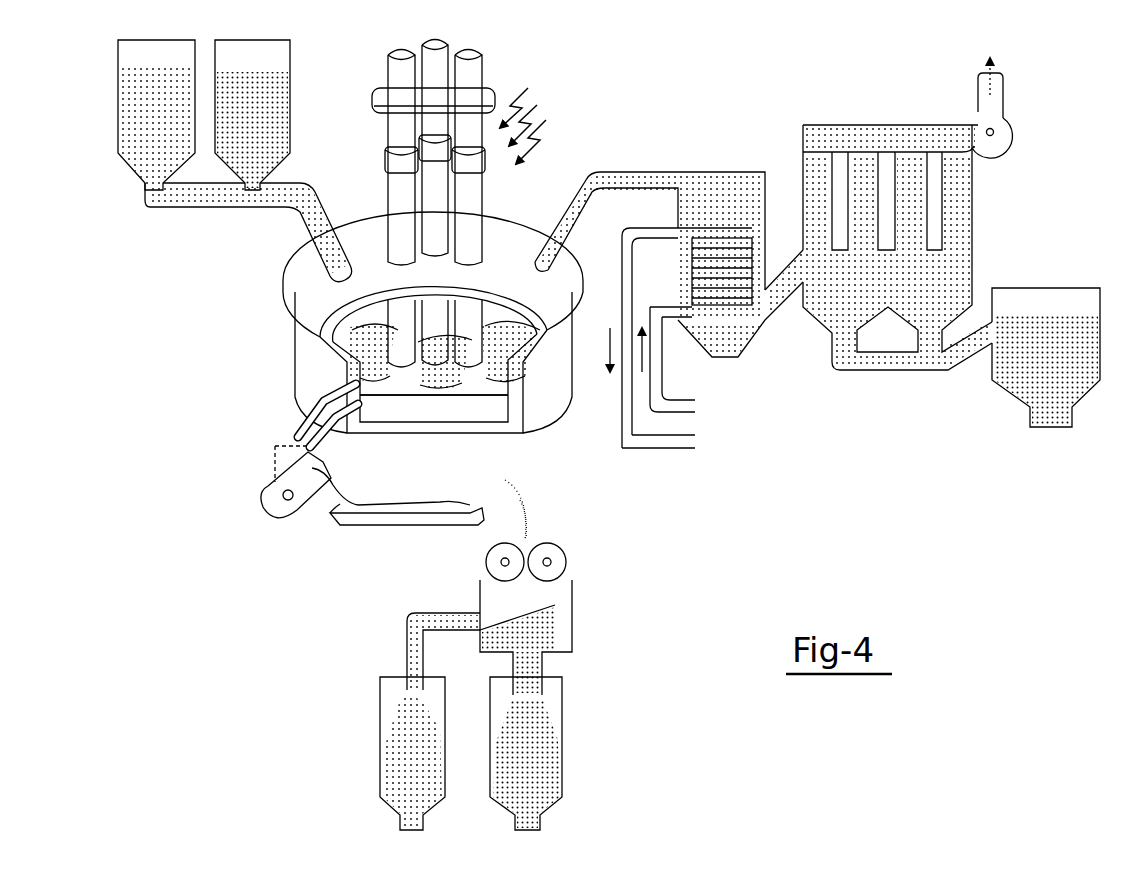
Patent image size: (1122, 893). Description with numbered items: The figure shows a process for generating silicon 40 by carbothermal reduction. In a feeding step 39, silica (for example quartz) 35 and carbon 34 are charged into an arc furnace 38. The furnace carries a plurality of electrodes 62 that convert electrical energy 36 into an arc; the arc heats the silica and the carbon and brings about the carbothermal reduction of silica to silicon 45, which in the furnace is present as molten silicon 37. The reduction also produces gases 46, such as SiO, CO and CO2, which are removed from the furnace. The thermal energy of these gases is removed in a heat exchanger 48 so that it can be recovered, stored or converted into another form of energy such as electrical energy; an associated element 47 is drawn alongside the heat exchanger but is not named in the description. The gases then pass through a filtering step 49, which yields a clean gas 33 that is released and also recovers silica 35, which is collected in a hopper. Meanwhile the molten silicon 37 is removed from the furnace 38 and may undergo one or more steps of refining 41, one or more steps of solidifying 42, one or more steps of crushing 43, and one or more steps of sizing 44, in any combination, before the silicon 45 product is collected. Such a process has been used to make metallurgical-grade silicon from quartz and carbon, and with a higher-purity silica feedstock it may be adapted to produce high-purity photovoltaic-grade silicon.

The clean gas 33 is at (1003, 85).
The carbon 34 is at (118, 47).
The silica 35 is at (1030, 420).
The electrical energy 36 is at (530, 106).
The molten silicon 37 is at (405, 380).
The arc furnace 38 is at (300, 345).
The feeding step 39 is at (290, 47).
The process for generating silicon 40 is at (320, 415).
The refining step 41 is at (265, 498).
The solidifying step 42 is at (400, 525).
The crushing step 43 is at (534, 546).
The sizing step 44 is at (475, 612).
The silicon 45 is at (515, 820).
The gases 46 is at (658, 172).
The cooling air inlet pipe 47 is at (662, 392).
The heat exchanger 48 is at (632, 292).
The filtering step 49 is at (972, 190).
The electrodes 62 is at (490, 70).